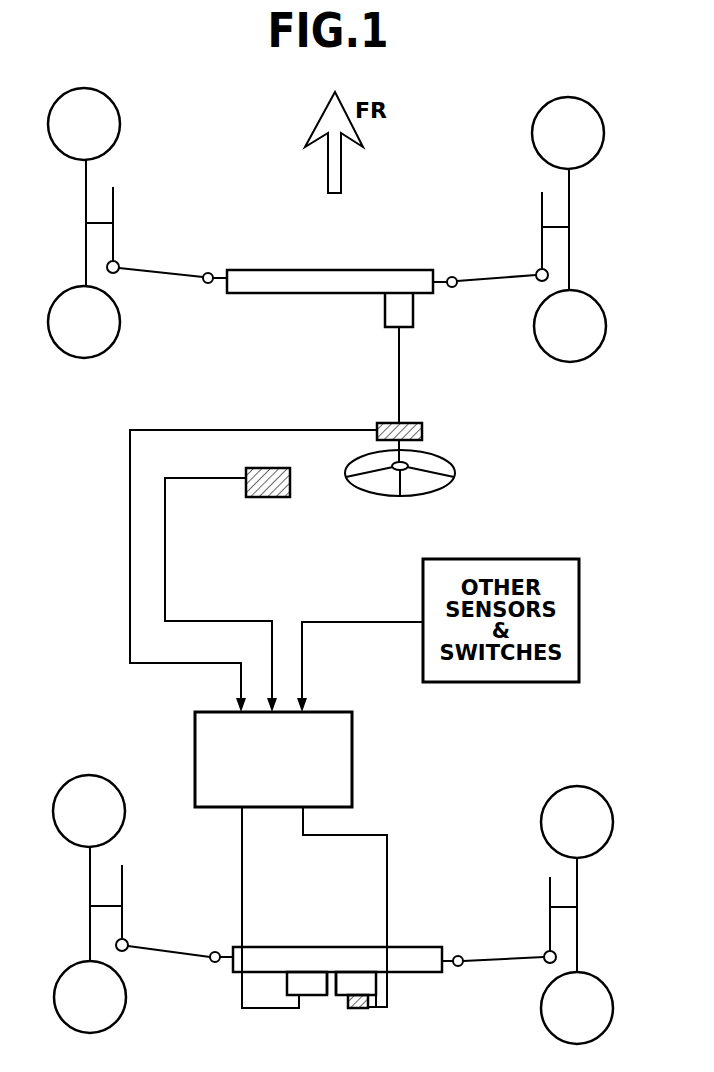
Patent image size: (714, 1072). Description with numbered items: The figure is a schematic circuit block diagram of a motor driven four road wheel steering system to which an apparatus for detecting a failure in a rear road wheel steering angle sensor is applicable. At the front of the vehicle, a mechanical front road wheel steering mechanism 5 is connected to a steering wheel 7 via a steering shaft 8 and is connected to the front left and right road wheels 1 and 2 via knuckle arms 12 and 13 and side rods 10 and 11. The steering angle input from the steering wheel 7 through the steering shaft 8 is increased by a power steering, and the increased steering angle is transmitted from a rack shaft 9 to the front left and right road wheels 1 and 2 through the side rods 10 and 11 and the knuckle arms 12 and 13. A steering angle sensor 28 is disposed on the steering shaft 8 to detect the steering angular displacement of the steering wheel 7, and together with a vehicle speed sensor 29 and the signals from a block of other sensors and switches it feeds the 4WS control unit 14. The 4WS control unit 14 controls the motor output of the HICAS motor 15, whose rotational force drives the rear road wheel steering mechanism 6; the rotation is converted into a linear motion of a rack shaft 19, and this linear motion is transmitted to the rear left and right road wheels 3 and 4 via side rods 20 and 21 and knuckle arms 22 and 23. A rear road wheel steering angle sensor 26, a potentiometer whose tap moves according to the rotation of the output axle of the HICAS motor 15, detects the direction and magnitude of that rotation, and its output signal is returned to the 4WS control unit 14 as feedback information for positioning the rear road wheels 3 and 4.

The front left road wheel 1 is at (118, 108).
The front right road wheel 2 is at (543, 108).
The rear left road wheel 3 is at (88, 772).
The rear right road wheel 4 is at (574, 786).
The mechanical front road wheel steering mechanism 5 is at (365, 260).
The rear road wheel steering mechanism 6 is at (326, 1012).
The steering wheel 7 is at (456, 477).
The steering shaft 8 is at (401, 367).
The rack shaft 9 is at (221, 268).
The side rod 10 is at (157, 277).
The side rod 11 is at (492, 284).
The knuckle arm 12 is at (118, 197).
The knuckle arm 13 is at (540, 197).
The 4WS control unit 14 is at (354, 762).
The HICAS motor 15 is at (310, 998).
The rack shaft 19 is at (216, 963).
The side rod 20 is at (157, 958).
The side rod 21 is at (490, 964).
The knuckle arm 22 is at (124, 888).
The knuckle arm 23 is at (549, 882).
The rear road wheel steering angle sensor 26 is at (360, 1011).
The steering angle sensor 28 is at (423, 432).
The vehicle speed sensor 29 is at (268, 498).